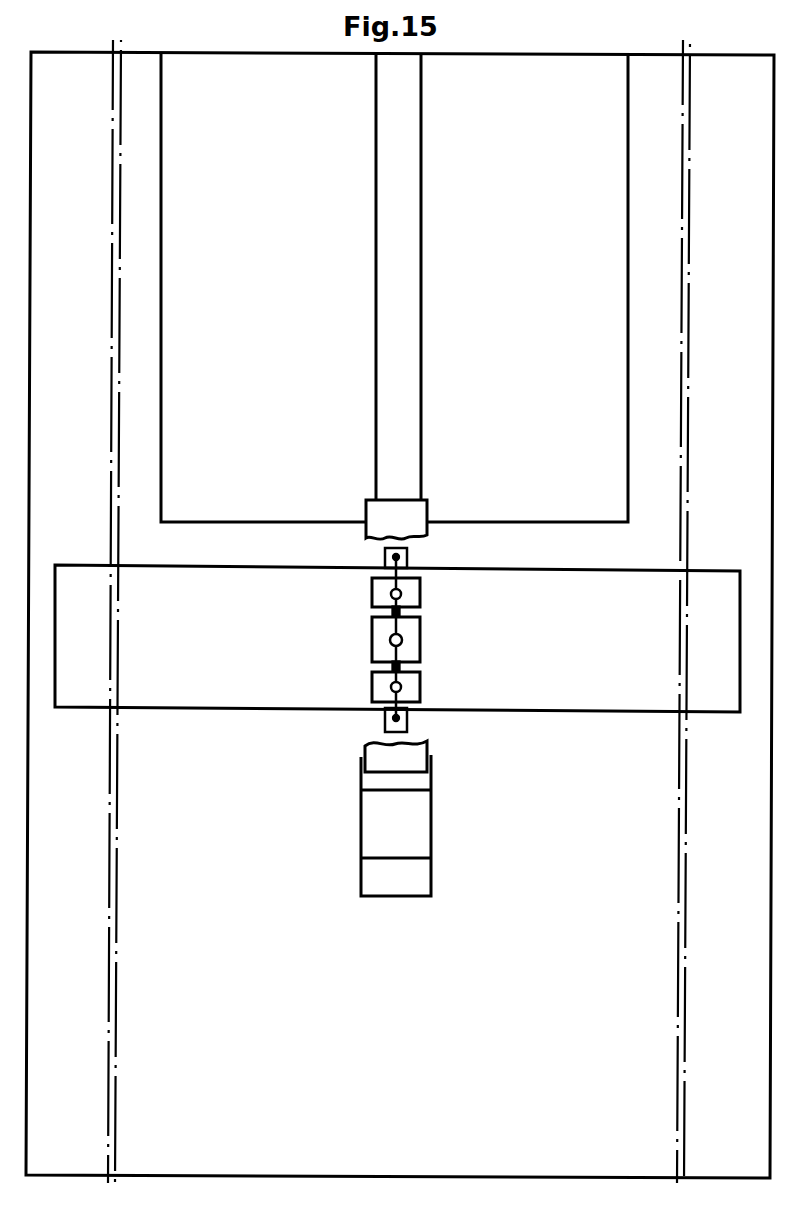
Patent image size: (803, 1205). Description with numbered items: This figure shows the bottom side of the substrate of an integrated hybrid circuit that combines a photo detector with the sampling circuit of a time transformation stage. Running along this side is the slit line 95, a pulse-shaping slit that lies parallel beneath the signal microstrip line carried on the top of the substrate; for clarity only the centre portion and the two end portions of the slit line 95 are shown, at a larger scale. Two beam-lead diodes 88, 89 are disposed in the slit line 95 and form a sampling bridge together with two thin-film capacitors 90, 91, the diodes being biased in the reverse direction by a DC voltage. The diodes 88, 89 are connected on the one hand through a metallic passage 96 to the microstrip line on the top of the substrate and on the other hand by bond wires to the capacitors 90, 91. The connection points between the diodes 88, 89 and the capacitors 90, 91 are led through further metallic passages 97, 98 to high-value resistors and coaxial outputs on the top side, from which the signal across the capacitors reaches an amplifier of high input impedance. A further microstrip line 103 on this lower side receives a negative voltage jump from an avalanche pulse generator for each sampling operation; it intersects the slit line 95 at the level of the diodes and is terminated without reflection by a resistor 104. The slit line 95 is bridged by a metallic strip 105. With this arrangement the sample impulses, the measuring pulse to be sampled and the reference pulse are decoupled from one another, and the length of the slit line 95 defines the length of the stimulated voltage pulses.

The diode 88 is at (400, 613).
The diode 89 is at (395, 665).
The capacitor 90 is at (388, 556).
The capacitor 91 is at (400, 720).
The slit line 95 is at (262, 692).
The metallic passage 96 is at (372, 638).
The metallic passage 97 is at (372, 592).
The metallic passage 98 is at (402, 687).
The microstrip line 103 is at (393, 342).
The resistor 104 is at (422, 831).
The metallic strip 105 is at (418, 513).